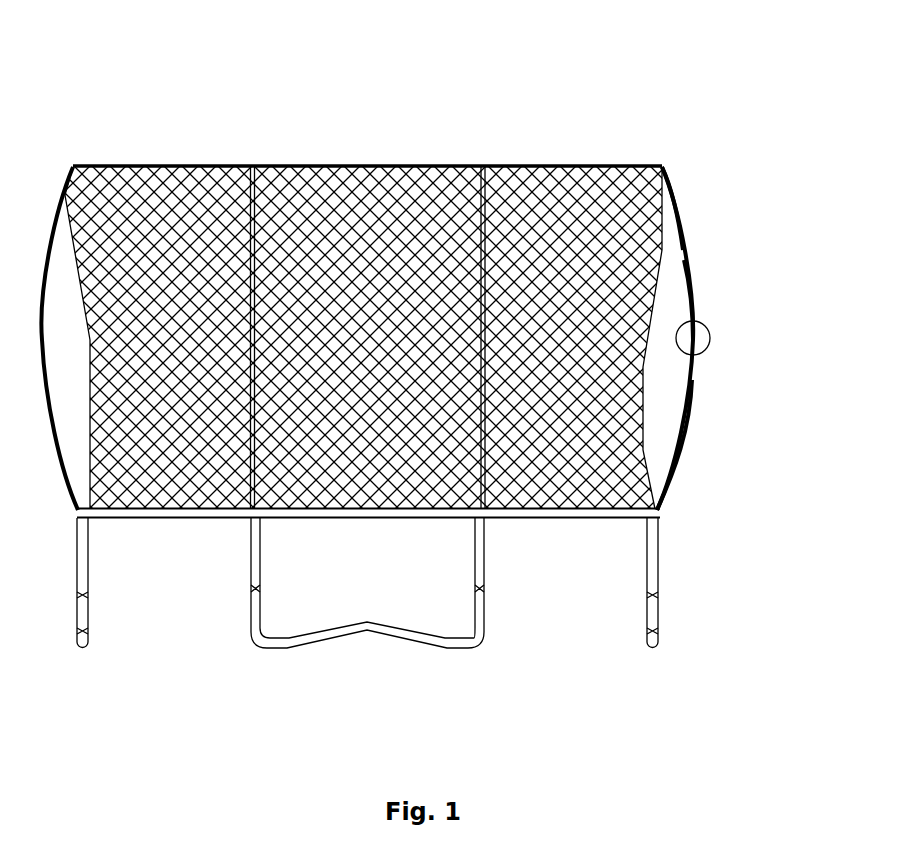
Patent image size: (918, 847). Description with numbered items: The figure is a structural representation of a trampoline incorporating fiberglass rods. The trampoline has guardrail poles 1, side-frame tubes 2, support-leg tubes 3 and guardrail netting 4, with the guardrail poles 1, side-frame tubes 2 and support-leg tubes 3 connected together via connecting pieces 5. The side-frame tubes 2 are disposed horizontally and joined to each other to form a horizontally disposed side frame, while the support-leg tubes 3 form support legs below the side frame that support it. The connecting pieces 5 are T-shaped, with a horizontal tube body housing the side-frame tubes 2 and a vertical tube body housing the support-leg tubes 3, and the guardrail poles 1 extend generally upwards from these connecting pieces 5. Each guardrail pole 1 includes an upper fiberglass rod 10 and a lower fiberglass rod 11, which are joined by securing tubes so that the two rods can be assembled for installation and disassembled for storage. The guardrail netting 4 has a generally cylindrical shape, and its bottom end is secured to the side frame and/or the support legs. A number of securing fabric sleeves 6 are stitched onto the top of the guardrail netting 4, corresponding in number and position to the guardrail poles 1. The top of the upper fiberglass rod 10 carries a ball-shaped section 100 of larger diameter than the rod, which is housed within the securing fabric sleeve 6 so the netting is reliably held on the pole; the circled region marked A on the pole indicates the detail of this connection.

The ball-shaped section 100 is at (662, 167).
The guardrail pole 1 is at (690, 290).
The side-frame tube 2 is at (588, 515).
The support-leg tube 3 is at (657, 562).
The guardrail netting 4 is at (568, 215).
The connecting piece 5 is at (657, 505).
The securing fabric sleeve 6 is at (672, 183).
The upper fiberglass rod 10 is at (683, 240).
The lower fiberglass rod 11 is at (684, 432).
The detail A is at (705, 352).